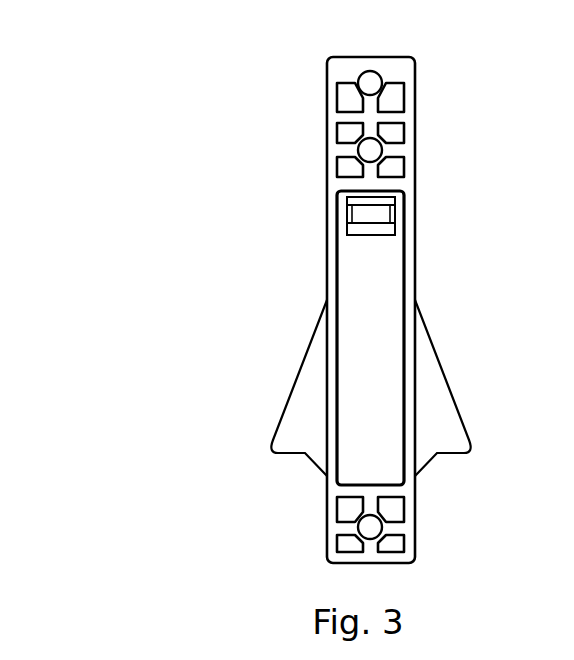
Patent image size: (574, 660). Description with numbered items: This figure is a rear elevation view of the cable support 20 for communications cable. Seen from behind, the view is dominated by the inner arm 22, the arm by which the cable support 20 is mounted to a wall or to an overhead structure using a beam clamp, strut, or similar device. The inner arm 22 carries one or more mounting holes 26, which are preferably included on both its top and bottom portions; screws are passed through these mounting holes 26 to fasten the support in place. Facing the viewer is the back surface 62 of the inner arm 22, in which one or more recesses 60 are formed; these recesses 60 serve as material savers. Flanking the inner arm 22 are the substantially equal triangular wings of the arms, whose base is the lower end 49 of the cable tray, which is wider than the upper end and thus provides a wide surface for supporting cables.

The cable support 20 is at (167, 242).
The inner arm 22 is at (326, 112).
The mounting holes 26 is at (372, 84).
The lower end 49 is at (271, 457).
The recesses 60 is at (418, 307).
The back surface 62 is at (426, 314).